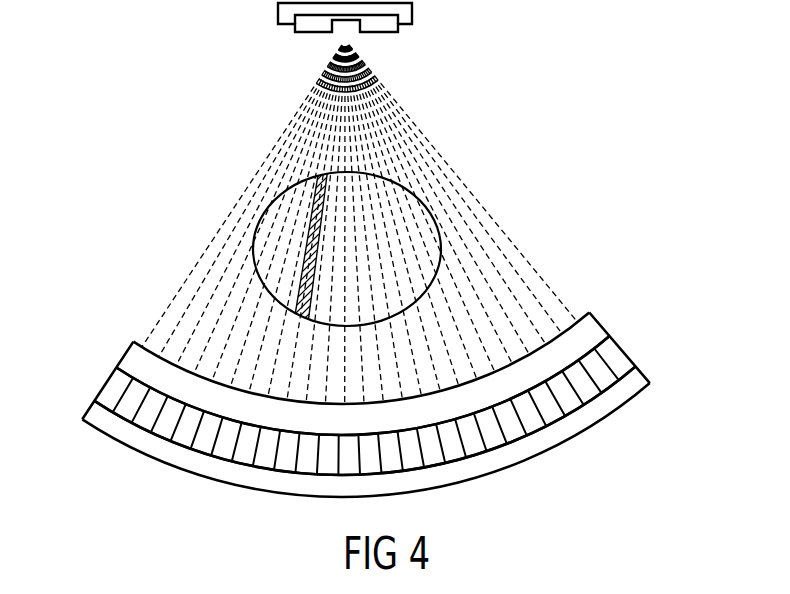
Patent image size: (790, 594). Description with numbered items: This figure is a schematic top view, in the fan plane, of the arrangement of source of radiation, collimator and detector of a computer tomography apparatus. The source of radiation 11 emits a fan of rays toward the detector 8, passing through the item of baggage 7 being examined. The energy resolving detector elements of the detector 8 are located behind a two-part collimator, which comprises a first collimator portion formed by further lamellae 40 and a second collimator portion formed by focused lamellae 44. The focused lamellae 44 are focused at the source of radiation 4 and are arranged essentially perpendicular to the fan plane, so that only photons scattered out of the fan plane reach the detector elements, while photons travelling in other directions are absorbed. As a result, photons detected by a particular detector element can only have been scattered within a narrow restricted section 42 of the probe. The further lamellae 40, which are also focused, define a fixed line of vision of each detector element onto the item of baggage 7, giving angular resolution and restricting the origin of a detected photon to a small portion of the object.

The source of radiation 4 is at (406, 11).
The source of radiation 11 is at (378, 83).
The item of baggage 7 is at (288, 197).
The narrow restricted section of the probe 42 is at (307, 238).
The further lamellae 40 is at (586, 324).
The focused lamellae 44 is at (622, 348).
The detector 8 is at (384, 392).